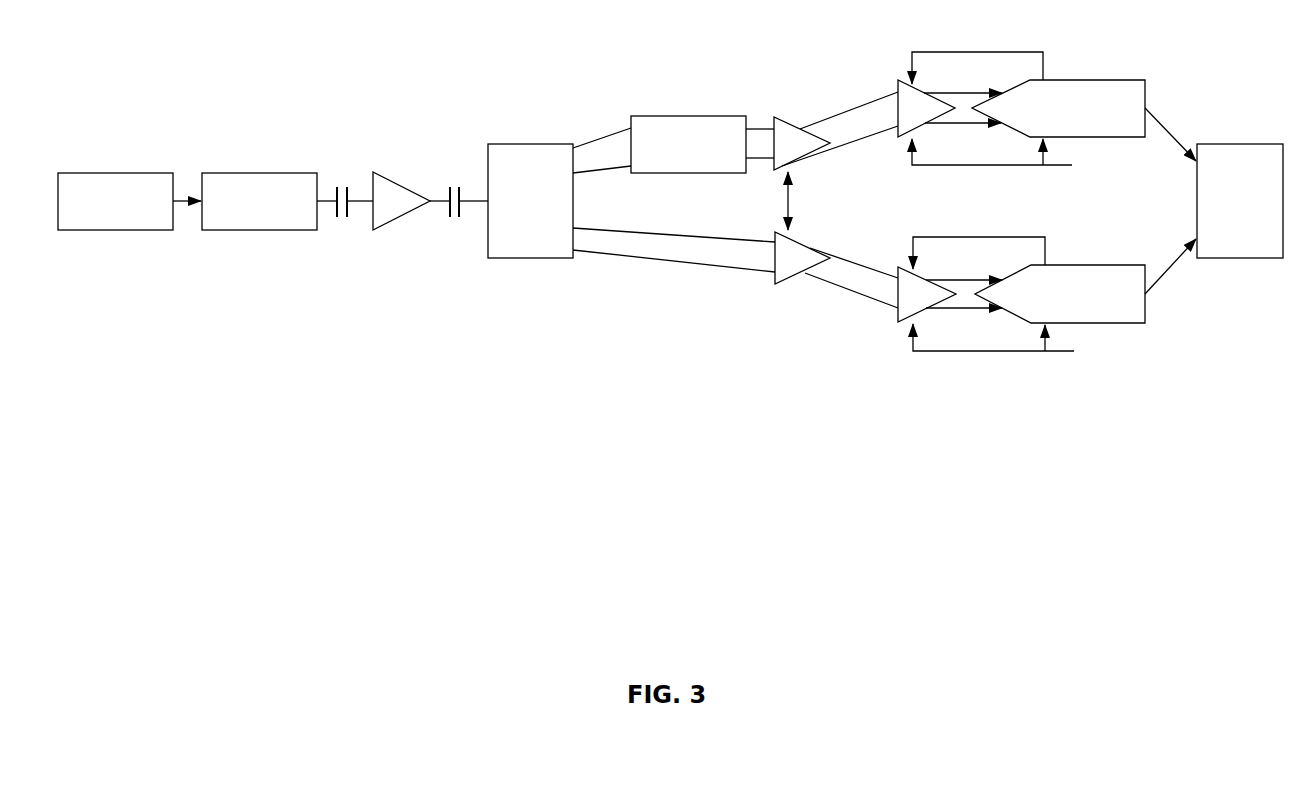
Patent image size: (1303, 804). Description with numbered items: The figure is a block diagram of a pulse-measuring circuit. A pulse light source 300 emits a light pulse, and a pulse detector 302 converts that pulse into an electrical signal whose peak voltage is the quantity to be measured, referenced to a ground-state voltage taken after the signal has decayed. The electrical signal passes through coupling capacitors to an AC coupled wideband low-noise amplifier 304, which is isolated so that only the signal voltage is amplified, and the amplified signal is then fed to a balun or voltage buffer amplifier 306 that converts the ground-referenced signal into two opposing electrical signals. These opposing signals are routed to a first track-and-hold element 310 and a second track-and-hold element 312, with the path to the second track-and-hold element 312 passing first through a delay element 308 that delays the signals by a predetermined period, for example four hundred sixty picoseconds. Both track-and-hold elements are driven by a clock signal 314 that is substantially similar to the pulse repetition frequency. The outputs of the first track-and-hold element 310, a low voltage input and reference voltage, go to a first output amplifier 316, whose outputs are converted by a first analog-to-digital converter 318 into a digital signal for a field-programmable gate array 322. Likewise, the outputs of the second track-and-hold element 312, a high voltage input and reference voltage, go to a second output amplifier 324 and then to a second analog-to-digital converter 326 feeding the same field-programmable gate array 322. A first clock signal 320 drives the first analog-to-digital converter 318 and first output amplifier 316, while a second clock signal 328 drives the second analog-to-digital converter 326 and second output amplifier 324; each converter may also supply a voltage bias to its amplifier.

The pulse light source 300 is at (102, 173).
The pulse detector 302 is at (250, 173).
The AC coupled wideband low-noise amplifier 304 is at (383, 180).
The balun or voltage buffer amplifier 306 is at (512, 258).
The delay element 308 is at (657, 173).
The first track-and-hold element 310 is at (780, 282).
The second track-and-hold element 312 is at (785, 121).
The clock signal 314 is at (790, 203).
The first output amplifier 316 is at (920, 308).
The first analog-to-digital converter 318 is at (1113, 323).
The first clock signal 320 is at (1074, 351).
The field-programmable gate array 322 is at (1220, 258).
The second output amplifier 324 is at (918, 122).
The second analog-to-digital converter 326 is at (1093, 80).
The second clock signal 328 is at (1072, 165).